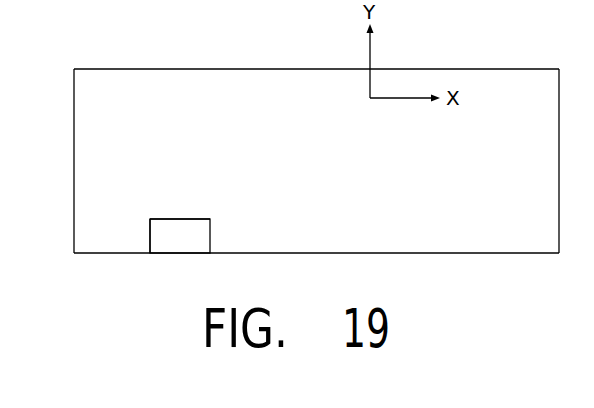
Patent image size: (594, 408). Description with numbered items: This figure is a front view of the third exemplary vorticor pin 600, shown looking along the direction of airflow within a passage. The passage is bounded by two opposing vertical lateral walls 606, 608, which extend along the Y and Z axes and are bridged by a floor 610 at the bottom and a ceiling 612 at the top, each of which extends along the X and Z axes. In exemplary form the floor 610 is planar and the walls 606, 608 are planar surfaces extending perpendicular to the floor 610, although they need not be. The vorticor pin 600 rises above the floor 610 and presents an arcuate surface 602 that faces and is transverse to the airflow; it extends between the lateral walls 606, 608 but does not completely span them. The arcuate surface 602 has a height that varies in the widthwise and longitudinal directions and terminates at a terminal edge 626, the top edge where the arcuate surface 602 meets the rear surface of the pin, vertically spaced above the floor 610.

The vorticor pin 600 is at (195, 245).
The arcuate surface 602 is at (172, 235).
The lateral wall 606 is at (559, 155).
The lateral wall 608 is at (76, 140).
The floor 610 is at (492, 253).
The ceiling 612 is at (483, 66).
The terminal edge 626 is at (190, 218).